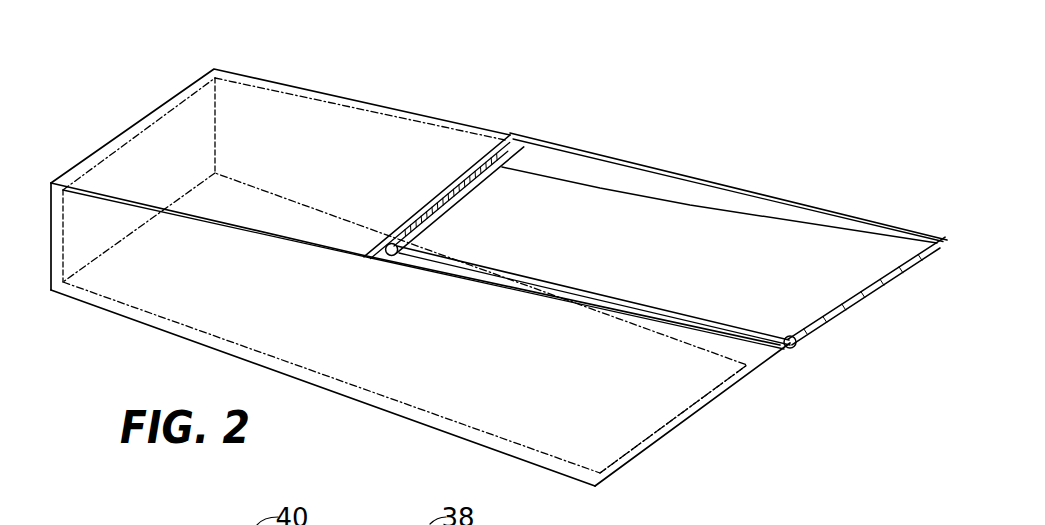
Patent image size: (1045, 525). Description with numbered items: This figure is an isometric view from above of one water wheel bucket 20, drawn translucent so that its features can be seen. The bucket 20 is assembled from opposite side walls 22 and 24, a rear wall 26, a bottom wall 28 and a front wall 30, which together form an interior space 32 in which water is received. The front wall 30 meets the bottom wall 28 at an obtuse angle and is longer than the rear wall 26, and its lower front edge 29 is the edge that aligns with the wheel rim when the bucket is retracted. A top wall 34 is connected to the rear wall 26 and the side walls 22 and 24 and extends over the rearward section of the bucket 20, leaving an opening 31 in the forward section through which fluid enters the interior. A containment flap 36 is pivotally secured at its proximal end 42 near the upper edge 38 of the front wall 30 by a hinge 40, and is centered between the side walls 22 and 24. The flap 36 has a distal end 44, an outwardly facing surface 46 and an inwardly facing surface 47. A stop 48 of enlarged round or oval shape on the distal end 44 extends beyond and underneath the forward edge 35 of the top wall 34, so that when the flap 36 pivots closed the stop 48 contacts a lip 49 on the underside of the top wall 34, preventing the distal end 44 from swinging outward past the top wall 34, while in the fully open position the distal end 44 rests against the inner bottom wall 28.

The bucket 20 is at (181, 42).
The side wall 22 is at (413, 371).
The side wall 24 is at (673, 170).
The rear wall 26 is at (65, 178).
The bottom wall 28 is at (100, 311).
The lower front edge 29 is at (660, 444).
The front wall 30 is at (727, 394).
The opening 31 is at (519, 137).
The interior space 32 is at (200, 170).
The top wall 34 is at (360, 128).
The forward edge 35 is at (475, 135).
The containment flap 36 is at (766, 240).
The upper edge 38 is at (792, 348).
The hinge 40 is at (917, 247).
The proximal end 42 is at (867, 263).
The distal end 44 is at (492, 185).
The outwardly facing surface 46 is at (608, 240).
The inwardly facing surface 47 is at (750, 330).
The stop 48 is at (527, 143).
The lip 49 is at (480, 135).